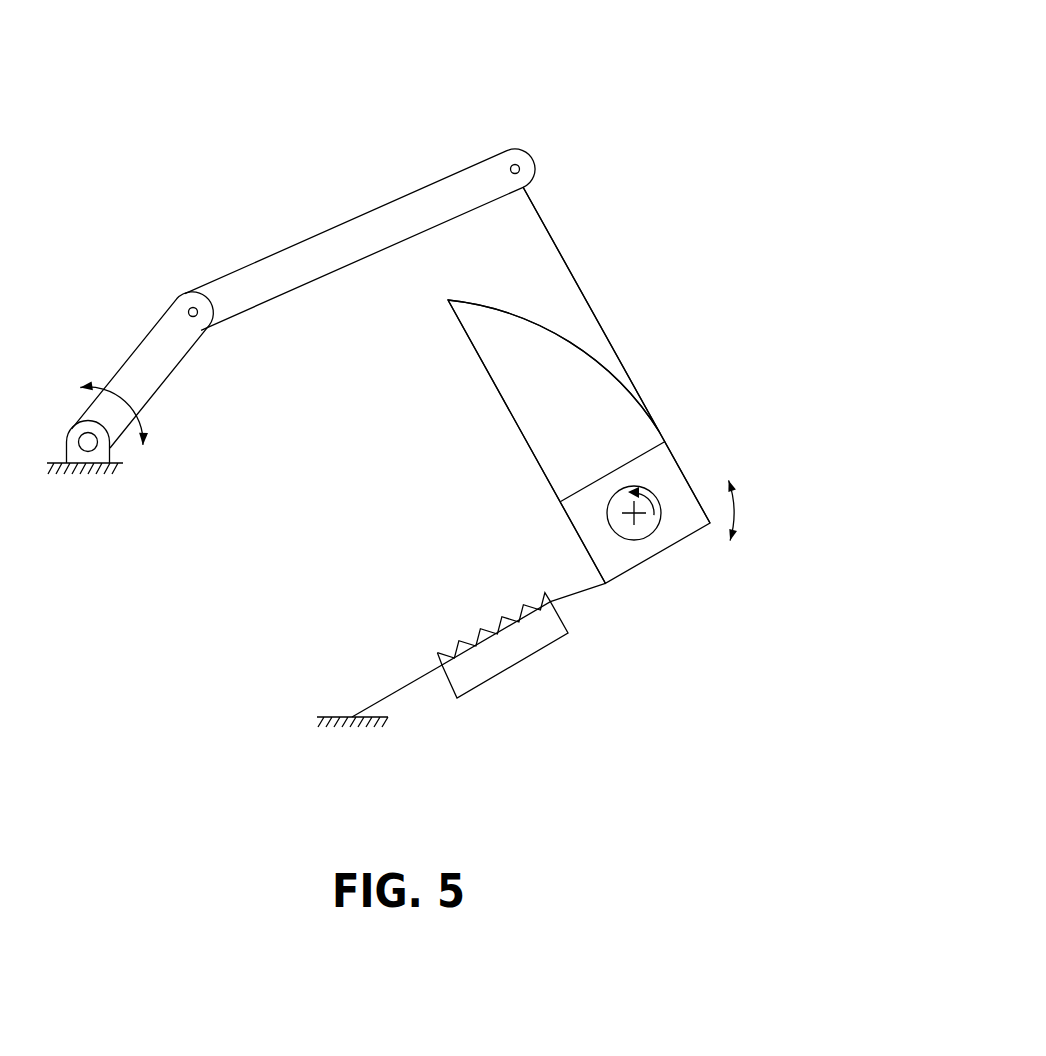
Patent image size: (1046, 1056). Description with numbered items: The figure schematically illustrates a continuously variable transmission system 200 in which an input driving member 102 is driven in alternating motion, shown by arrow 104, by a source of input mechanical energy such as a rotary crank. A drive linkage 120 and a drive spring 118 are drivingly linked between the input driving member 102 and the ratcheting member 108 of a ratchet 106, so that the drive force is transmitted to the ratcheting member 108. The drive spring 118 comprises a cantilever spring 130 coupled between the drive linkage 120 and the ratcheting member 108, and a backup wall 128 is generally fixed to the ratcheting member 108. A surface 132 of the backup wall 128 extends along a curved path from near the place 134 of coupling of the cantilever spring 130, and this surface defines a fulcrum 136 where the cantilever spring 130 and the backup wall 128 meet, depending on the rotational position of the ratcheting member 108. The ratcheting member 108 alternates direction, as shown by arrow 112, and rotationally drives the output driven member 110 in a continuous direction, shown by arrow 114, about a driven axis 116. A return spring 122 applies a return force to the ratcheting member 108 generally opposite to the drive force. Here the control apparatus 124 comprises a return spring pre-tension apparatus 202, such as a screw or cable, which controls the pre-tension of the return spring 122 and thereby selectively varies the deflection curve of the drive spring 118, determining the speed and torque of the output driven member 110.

The continuously variable transmission system 200 is at (558, 70).
The input driving member 102 is at (148, 333).
The arrow 104 is at (138, 425).
The drive linkage 120 is at (345, 222).
The ratchet 106 is at (667, 570).
The cantilever spring 130 is at (548, 229).
The backup wall 128 is at (556, 310).
The drive spring 118 is at (596, 286).
The surface 132 is at (527, 306).
The fulcrum 136 is at (659, 405).
The place of coupling 134 is at (669, 425).
The arrow 114 is at (648, 498).
The arrow 112 is at (735, 514).
The ratcheting member 108 is at (567, 518).
The driven axis 116 is at (634, 513).
The output driven member 110 is at (634, 513).
The return spring pre-tension apparatus 202 is at (508, 660).
The return spring 122 is at (463, 640).
The control apparatus 124 is at (500, 692).